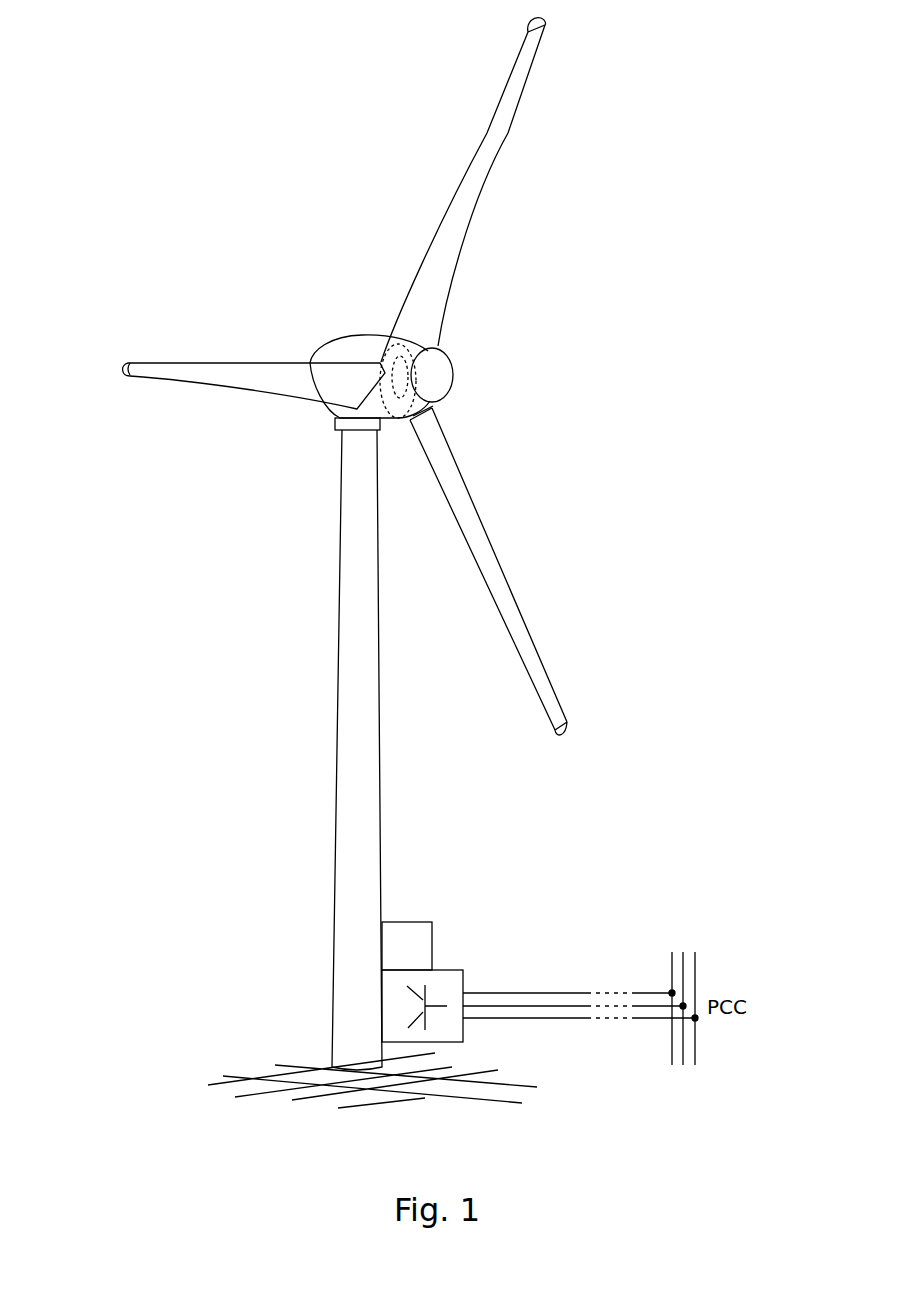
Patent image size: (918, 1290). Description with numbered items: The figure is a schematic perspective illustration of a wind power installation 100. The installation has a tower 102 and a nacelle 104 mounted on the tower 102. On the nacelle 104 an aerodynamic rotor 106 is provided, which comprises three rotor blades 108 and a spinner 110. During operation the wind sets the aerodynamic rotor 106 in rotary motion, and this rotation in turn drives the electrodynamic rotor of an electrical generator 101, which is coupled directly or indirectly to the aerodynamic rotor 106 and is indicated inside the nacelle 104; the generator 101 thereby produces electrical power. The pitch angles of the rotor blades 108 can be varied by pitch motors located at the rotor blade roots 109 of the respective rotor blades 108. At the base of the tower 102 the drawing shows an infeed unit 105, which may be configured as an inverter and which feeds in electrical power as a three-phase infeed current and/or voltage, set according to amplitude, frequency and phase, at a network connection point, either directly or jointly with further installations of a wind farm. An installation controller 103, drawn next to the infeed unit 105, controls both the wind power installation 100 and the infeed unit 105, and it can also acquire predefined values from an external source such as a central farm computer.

The wind power installation 100 is at (297, 495).
The electrical generator 101 is at (403, 340).
The tower 102 is at (363, 750).
The installation controller 103 is at (427, 942).
The nacelle 104 is at (353, 355).
The infeed unit 105 is at (465, 1028).
The aerodynamic rotor 106 is at (515, 302).
The rotor blades 108 is at (200, 363).
The rotor blade roots 109 is at (437, 412).
The spinner 110 is at (437, 373).